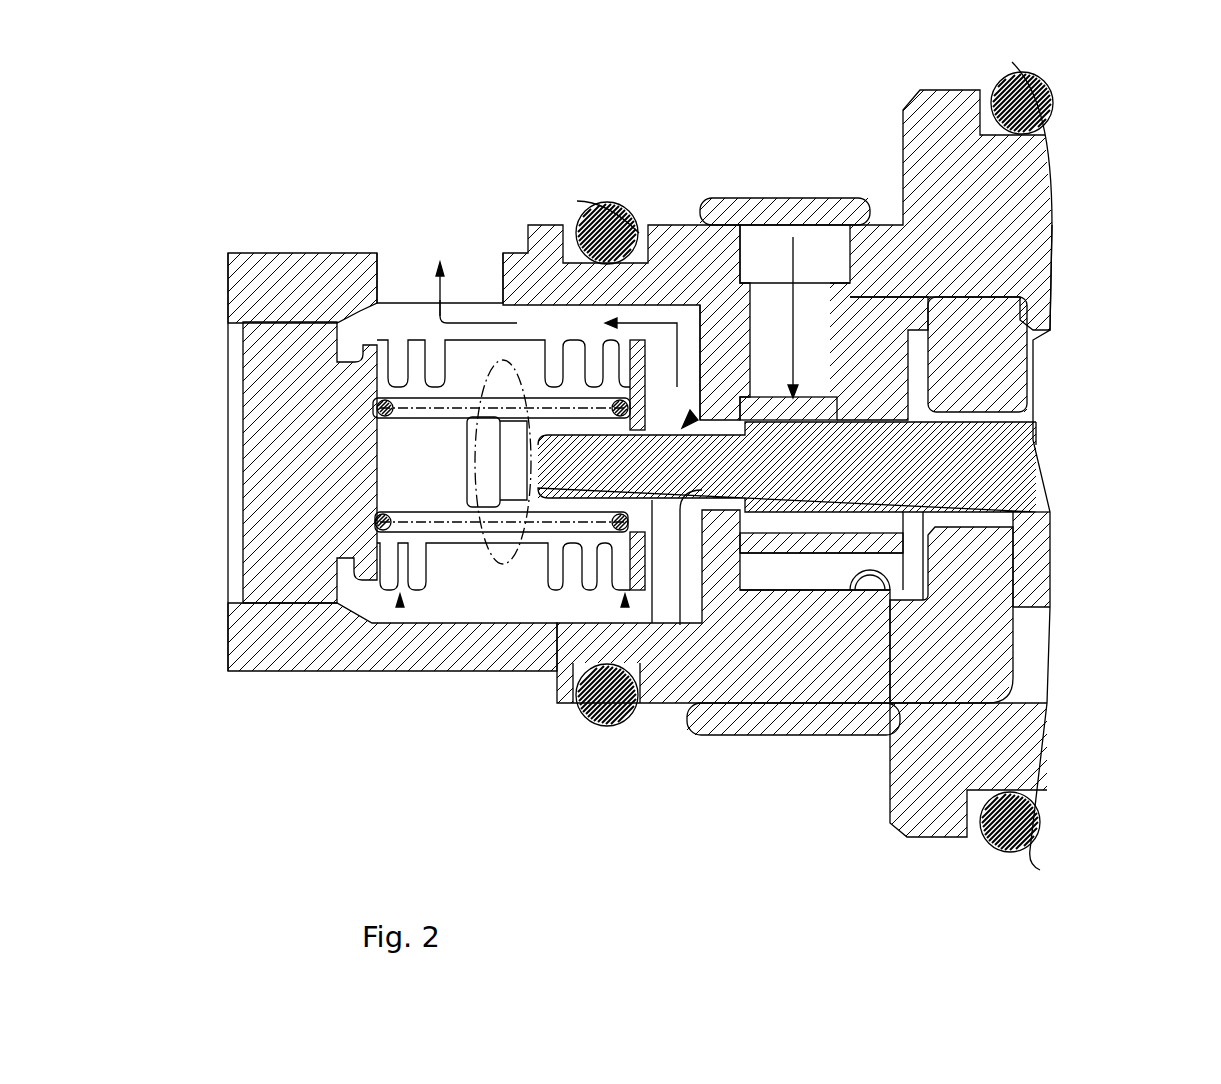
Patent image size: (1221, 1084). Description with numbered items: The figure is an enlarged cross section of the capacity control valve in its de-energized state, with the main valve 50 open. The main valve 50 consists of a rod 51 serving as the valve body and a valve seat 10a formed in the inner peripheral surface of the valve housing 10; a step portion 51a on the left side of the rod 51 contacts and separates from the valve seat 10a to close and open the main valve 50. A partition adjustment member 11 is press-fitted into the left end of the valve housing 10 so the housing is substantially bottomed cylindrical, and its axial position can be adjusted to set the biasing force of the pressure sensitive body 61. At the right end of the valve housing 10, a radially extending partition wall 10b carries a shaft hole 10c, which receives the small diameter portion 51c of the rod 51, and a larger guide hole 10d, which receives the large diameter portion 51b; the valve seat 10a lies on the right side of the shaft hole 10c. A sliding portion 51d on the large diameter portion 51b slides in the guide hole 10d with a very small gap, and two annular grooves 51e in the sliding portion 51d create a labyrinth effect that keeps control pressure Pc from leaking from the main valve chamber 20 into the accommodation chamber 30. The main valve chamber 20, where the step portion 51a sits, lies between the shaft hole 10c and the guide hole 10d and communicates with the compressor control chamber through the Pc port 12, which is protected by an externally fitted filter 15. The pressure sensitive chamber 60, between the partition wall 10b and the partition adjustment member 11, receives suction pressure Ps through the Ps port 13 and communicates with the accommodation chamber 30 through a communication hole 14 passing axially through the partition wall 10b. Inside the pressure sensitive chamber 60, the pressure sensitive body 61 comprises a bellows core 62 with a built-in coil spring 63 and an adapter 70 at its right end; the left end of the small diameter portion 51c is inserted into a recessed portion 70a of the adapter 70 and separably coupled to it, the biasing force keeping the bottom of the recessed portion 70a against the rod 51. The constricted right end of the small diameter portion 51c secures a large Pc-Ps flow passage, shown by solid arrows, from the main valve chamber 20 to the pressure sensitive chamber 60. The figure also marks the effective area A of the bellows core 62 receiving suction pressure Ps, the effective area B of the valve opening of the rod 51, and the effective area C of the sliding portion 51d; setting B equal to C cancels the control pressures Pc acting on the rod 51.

The valve housing 10 is at (258, 236).
The valve seat 10a is at (686, 405).
The partition wall 10b is at (745, 600).
The shaft hole 10c is at (680, 710).
The guide hole 10d is at (905, 265).
The partition adjustment member 11 is at (242, 457).
The Pc port 12 is at (772, 312).
The Ps port 13 is at (380, 253).
The communication hole 14 is at (870, 575).
The filter 15 is at (753, 736).
The main valve chamber 20 is at (848, 222).
The accommodation chamber 30 is at (900, 600).
The main valve 50 is at (686, 158).
The rod 51 is at (1045, 527).
The step portion 51a is at (745, 400).
The large diameter portion 51b is at (1045, 545).
The small diameter portion 51c is at (588, 722).
The sliding portion 51d is at (915, 300).
The grooves 51e is at (1036, 445).
The pressure sensitive chamber 60 is at (347, 253).
The pressure sensitive body 61 is at (388, 535).
The bellows core 62 is at (430, 535).
The coil spring 63 is at (605, 590).
The adapter 70 is at (650, 575).
The recessed portion 70a is at (472, 512).
The effective area of the bellows core A is at (470, 555).
The effective area of the valve opening B is at (700, 560).
The effective area of the sliding portion C is at (810, 560).
The suction pressure Ps is at (440, 252).
The control pressure Pc is at (795, 205).